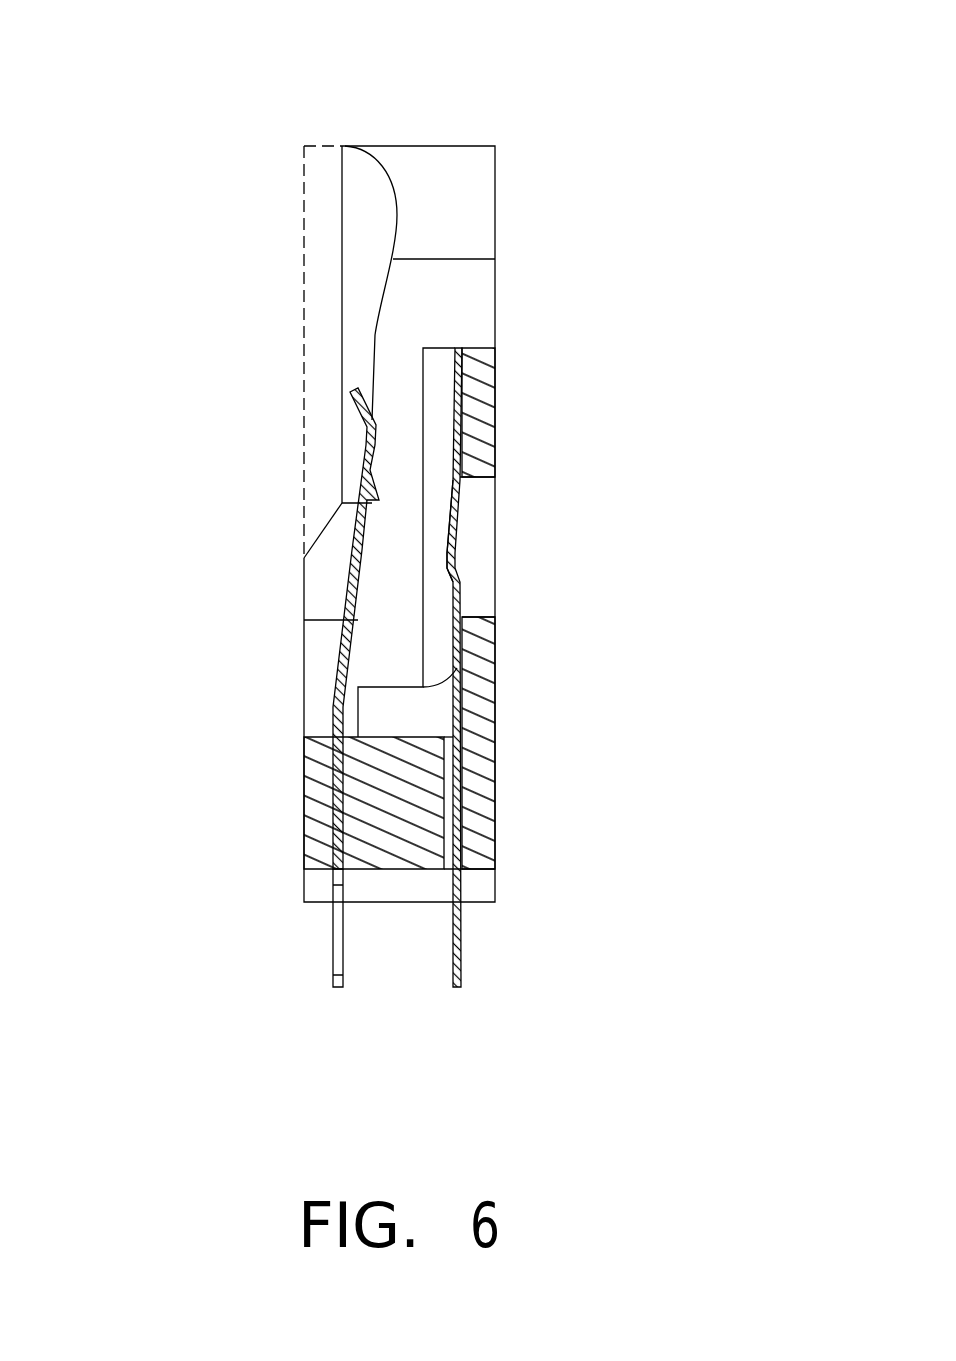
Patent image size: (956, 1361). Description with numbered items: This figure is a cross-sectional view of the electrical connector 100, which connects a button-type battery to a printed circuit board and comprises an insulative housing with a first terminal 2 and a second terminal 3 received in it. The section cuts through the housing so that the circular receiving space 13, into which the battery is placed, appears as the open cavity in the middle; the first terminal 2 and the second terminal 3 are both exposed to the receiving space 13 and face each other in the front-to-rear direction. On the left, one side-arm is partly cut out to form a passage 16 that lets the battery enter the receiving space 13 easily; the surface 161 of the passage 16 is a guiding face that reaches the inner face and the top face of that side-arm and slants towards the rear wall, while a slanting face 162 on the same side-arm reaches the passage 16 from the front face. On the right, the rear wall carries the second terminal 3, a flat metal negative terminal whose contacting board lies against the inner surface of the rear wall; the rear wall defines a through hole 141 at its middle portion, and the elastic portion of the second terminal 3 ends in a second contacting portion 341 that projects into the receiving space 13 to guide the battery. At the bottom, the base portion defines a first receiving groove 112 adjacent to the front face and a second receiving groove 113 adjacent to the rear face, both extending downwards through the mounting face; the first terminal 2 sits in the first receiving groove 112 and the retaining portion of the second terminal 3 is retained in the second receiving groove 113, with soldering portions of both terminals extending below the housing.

The electrical connector 100 is at (462, 122).
The passage 16 is at (325, 228).
The surface of the passage 161 is at (385, 215).
The slanting face 162 is at (322, 528).
The receiving space 13 is at (398, 387).
The through hole 141 is at (475, 578).
The second contacting portion 341 is at (458, 545).
The first terminal 2 is at (342, 645).
The second terminal 3 is at (466, 702).
The first receiving groove 112 is at (304, 790).
The second receiving groove 113 is at (468, 792).